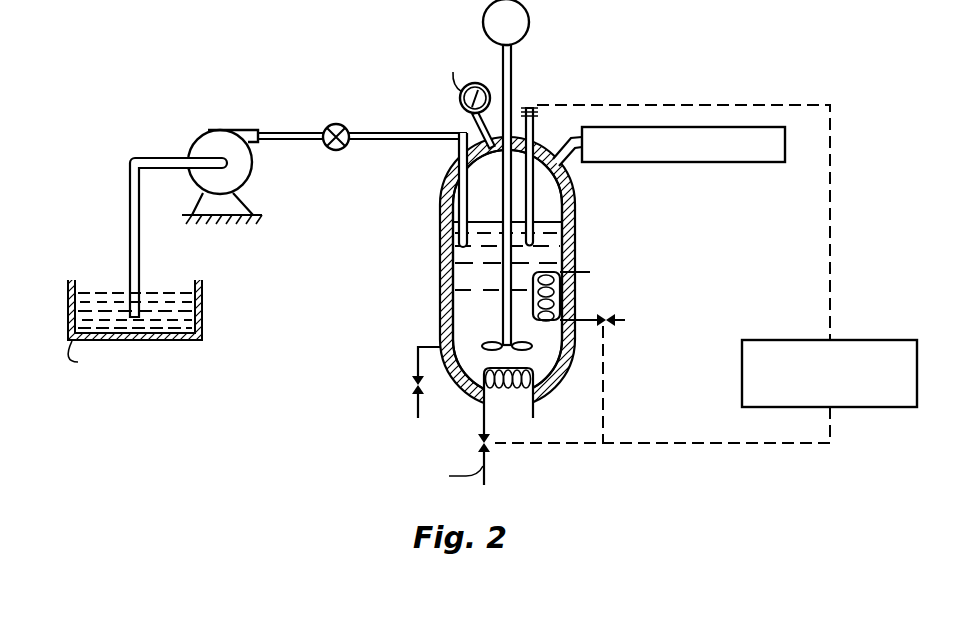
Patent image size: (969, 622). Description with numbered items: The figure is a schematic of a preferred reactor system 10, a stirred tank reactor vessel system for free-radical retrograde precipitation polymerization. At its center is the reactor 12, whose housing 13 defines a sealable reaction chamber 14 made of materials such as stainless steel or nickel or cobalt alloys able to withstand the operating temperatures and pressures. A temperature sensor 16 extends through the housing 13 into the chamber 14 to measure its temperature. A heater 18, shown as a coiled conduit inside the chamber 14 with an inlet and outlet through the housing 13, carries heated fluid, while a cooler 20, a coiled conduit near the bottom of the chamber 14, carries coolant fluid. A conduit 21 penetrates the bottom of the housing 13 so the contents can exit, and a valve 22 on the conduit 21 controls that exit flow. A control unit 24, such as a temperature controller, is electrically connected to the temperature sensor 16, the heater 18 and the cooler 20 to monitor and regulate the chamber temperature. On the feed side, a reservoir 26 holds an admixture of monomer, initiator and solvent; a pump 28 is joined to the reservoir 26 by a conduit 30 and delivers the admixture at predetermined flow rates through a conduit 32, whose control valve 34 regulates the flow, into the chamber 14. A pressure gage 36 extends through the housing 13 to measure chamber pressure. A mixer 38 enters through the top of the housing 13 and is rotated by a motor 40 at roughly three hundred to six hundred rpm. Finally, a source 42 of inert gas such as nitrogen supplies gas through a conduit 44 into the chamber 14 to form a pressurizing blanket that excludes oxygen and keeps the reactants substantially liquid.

The reactor system 10 is at (744, 68).
The reactor 12 is at (583, 241).
The housing 13 is at (574, 266).
The reaction chamber 14 is at (456, 297).
The temperature sensor 16 is at (534, 136).
The heater 18 is at (575, 291).
The cooler 20 is at (500, 412).
The conduit 21 is at (417, 352).
The valve 22 is at (412, 391).
The control unit 24 is at (867, 347).
The reservoir 26 is at (203, 311).
The pump 28 is at (221, 140).
The conduit 30 is at (130, 247).
The conduit 32 is at (374, 141).
The control valve 34 is at (333, 124).
The pressure gage 36 is at (470, 85).
The mixer 38 is at (500, 312).
The motor 40 is at (530, 33).
The source of inert gas 42 is at (726, 166).
The conduit 44 is at (574, 158).